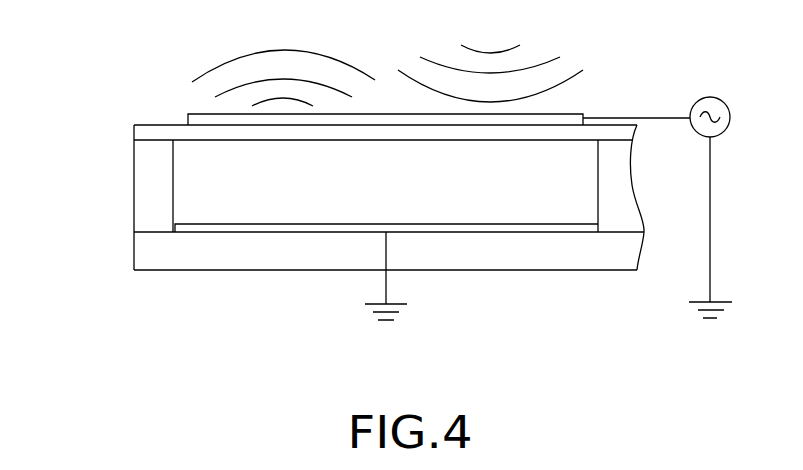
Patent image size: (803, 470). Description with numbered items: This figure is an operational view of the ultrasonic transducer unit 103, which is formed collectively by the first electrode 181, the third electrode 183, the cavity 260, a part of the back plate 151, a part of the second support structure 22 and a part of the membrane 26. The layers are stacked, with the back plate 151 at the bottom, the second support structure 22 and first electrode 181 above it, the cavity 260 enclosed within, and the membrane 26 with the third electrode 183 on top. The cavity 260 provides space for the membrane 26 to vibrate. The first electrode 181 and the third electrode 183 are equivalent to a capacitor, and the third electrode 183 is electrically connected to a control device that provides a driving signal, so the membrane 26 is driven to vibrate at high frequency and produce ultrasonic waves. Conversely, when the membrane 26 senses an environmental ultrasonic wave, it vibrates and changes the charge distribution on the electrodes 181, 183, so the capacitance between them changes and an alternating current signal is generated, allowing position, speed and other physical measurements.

The ultrasonic transducer unit 103 is at (165, 58).
The third electrode 183 is at (207, 115).
The membrane 26 is at (153, 135).
The cavity 260 is at (192, 169).
The second support structure 22 is at (152, 185).
The first electrode 181 is at (208, 230).
The back plate 151 is at (152, 253).